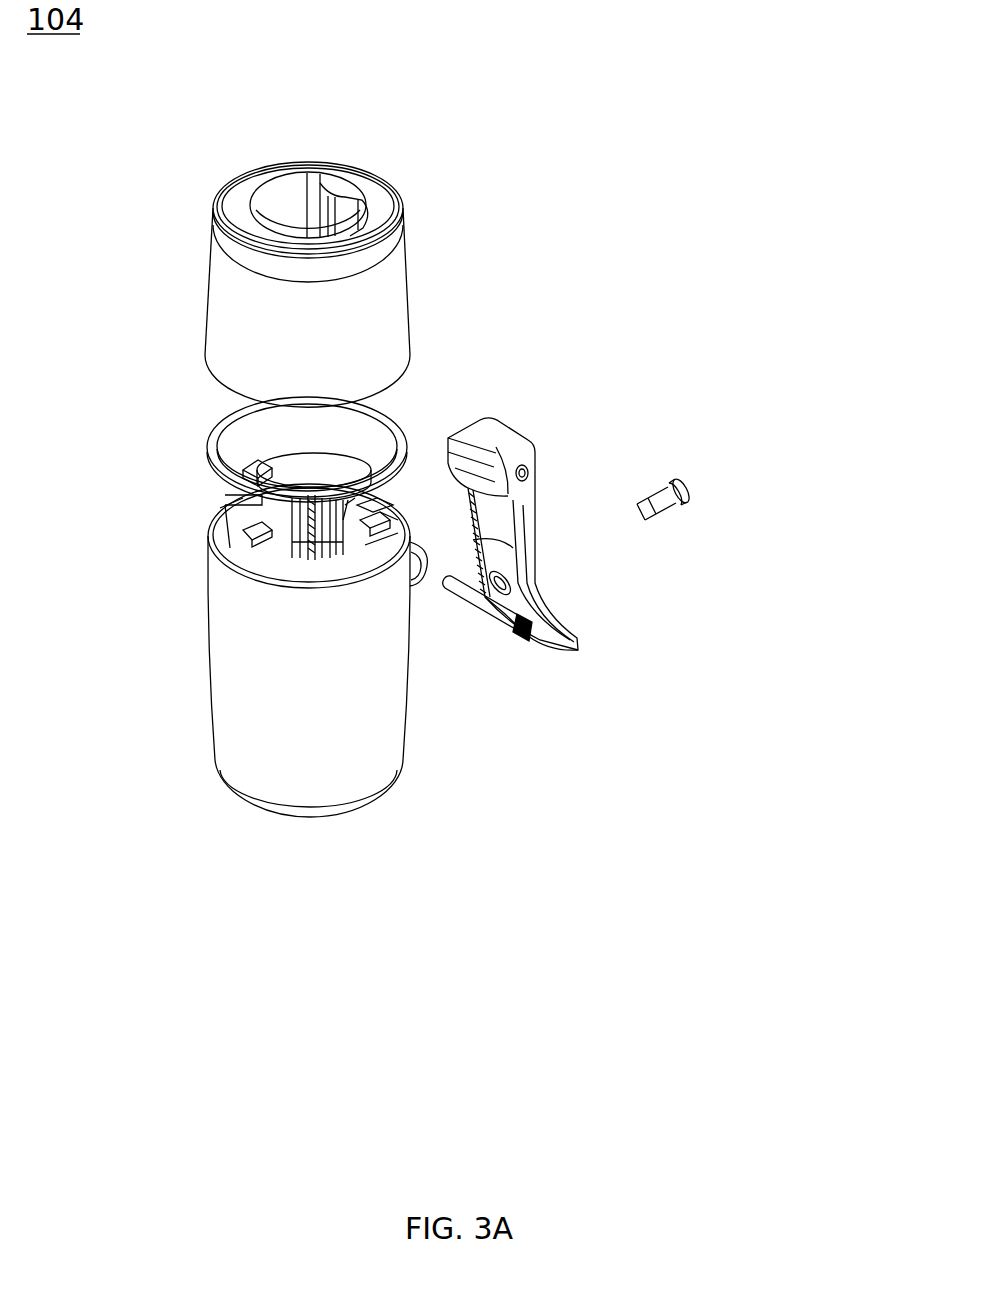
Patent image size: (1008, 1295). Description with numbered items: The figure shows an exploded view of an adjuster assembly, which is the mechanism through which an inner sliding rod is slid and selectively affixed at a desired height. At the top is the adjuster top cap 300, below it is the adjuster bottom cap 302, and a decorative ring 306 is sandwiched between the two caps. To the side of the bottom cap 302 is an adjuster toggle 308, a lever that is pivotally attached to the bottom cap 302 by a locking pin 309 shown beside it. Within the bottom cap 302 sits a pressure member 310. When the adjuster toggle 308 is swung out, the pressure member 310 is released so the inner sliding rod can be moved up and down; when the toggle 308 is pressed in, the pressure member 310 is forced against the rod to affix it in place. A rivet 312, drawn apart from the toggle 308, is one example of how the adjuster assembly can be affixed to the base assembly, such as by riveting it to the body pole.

The adjuster top cap 300 is at (243, 247).
The adjuster bottom cap 302 is at (254, 769).
The decorative ring 306 is at (207, 440).
The adjuster toggle 308 is at (507, 493).
The locking pin 309 is at (481, 620).
The pressure member 310 is at (326, 540).
The rivet 312 is at (683, 517).